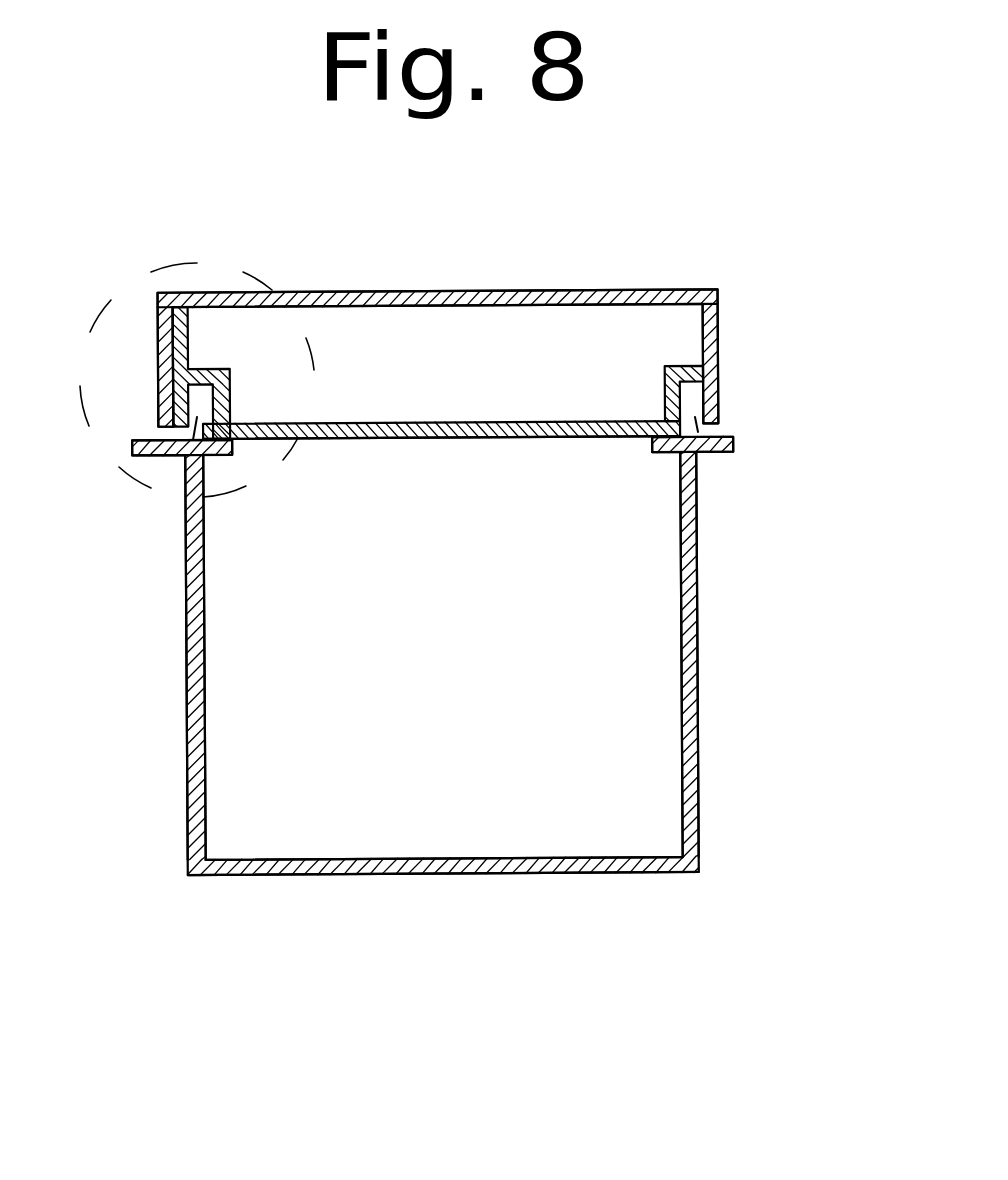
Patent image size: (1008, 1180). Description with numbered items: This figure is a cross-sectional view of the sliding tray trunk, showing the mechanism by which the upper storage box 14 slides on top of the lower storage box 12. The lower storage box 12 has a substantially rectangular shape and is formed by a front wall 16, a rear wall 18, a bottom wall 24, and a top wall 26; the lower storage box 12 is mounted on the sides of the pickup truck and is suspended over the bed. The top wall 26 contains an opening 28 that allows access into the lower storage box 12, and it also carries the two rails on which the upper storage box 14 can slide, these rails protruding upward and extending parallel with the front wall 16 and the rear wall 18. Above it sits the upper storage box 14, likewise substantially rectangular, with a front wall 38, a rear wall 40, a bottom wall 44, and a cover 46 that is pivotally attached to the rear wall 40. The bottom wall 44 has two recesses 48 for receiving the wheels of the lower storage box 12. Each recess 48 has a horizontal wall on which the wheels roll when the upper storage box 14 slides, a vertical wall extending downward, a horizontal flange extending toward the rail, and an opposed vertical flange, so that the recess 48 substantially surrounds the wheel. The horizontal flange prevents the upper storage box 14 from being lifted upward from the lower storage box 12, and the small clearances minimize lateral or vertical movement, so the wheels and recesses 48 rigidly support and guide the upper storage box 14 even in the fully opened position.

The lower storage box 12 is at (455, 676).
The upper storage box 14 is at (517, 284).
The front wall 16 is at (187, 652).
The rear wall 18 is at (700, 823).
The bottom wall 24 is at (453, 875).
The top wall 26 is at (725, 437).
The opening 28 is at (572, 438).
The front wall 38 is at (196, 333).
The rear wall 40 is at (718, 292).
The bottom wall 44 is at (395, 423).
The cover 46 is at (540, 290).
The recesses 48 is at (187, 457).